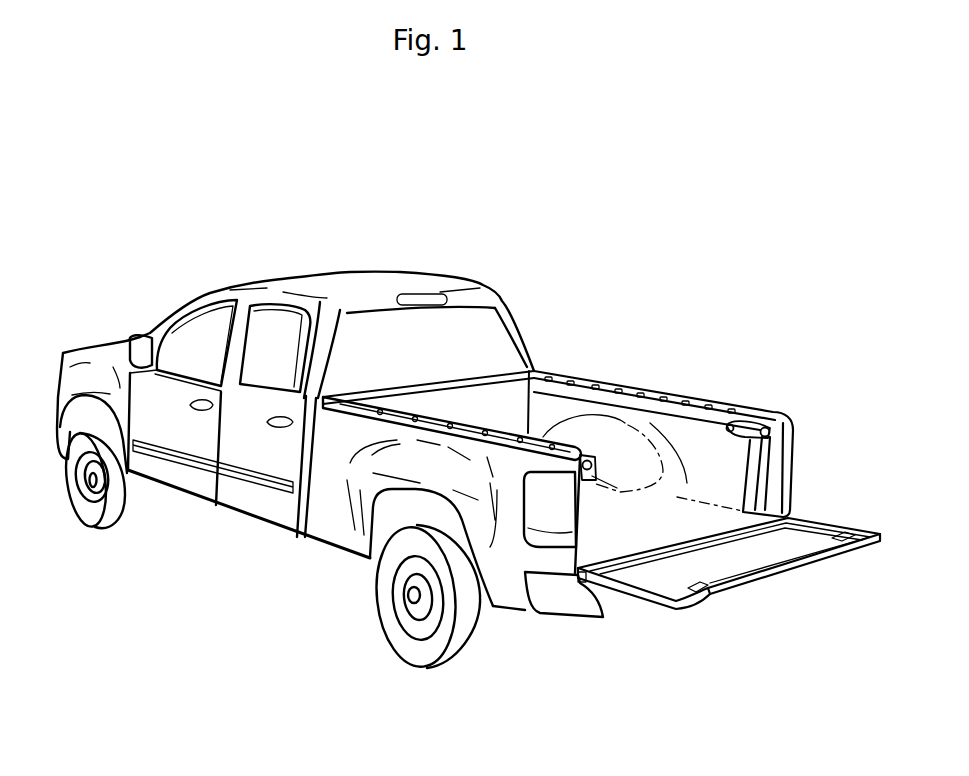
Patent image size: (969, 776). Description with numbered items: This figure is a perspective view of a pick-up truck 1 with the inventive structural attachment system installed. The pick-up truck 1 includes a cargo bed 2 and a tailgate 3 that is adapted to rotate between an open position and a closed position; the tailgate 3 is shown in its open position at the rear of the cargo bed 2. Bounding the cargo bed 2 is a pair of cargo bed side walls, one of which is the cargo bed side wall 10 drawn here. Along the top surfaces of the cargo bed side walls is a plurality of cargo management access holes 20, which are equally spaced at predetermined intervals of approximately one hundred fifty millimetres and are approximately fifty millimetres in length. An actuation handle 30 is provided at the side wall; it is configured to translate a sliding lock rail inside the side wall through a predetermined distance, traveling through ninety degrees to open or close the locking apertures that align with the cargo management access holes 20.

The pick-up truck 1 is at (717, 268).
The cargo bed side wall 10 is at (495, 582).
The cargo management access holes 20 is at (657, 398).
The actuation handle 30 is at (755, 427).
The cargo bed 2 is at (632, 527).
The tailgate 3 is at (727, 563).